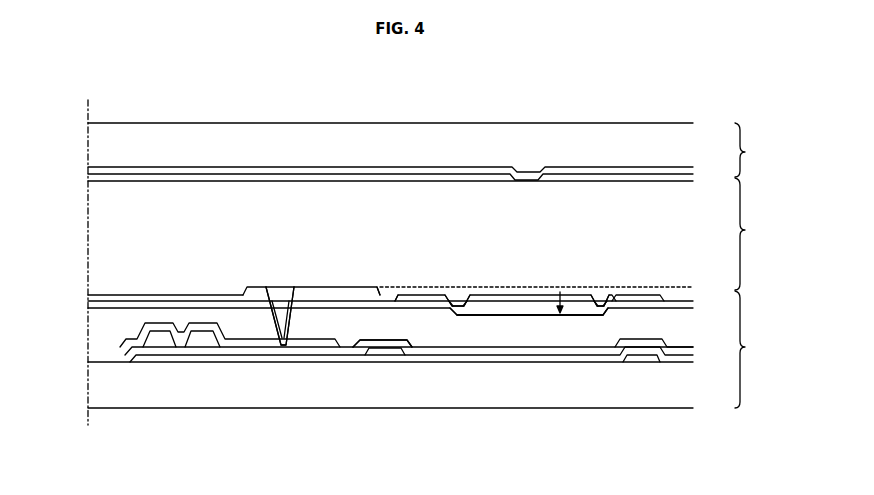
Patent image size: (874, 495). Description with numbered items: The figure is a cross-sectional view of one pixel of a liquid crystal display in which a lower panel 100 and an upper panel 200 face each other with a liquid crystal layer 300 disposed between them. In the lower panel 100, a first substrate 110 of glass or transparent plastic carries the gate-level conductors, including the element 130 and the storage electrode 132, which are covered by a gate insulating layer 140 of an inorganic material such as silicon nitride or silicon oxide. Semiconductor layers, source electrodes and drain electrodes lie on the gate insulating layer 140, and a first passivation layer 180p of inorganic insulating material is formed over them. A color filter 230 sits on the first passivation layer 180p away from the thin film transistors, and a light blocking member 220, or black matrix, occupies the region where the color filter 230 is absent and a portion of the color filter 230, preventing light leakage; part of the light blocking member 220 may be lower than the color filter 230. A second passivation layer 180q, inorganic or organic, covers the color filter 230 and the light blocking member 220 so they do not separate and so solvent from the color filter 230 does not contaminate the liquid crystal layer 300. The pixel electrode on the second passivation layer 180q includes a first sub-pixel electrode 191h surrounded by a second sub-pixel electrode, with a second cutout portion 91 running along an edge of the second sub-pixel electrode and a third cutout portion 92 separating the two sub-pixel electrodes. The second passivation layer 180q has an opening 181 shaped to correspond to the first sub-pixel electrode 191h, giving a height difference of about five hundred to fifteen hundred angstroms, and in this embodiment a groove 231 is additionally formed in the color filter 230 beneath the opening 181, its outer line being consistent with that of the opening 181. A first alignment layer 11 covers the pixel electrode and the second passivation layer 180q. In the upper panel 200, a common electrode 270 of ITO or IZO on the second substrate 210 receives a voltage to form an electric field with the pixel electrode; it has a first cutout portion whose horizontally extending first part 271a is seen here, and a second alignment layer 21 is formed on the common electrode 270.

The second substrate 210 is at (313, 136).
The common electrode 270 is at (390, 165).
The first part of first cutout portion 271a is at (520, 177).
The second alignment layer 21 is at (294, 182).
The upper panel 200 is at (761, 150).
The liquid crystal layer 300 is at (761, 234).
The lower panel 100 is at (761, 349).
The first substrate 110 is at (588, 385).
The first passivation layer 180p is at (470, 349).
The second passivation layer 180q is at (90, 303).
The light blocking member 220 is at (355, 346).
The light blocking member 130 is at (393, 364).
The storage electrode 132 is at (642, 358).
The gate insulating layer 140 is at (282, 358).
The first alignment layer 11 is at (112, 297).
The first sub-pixel electrode 191h is at (520, 313).
The opening 181 is at (458, 300).
The third cutout portion 92 is at (453, 297).
The second cutout portion 91 is at (378, 290).
The groove 231 is at (558, 290).
The color filter 230 is at (540, 326).